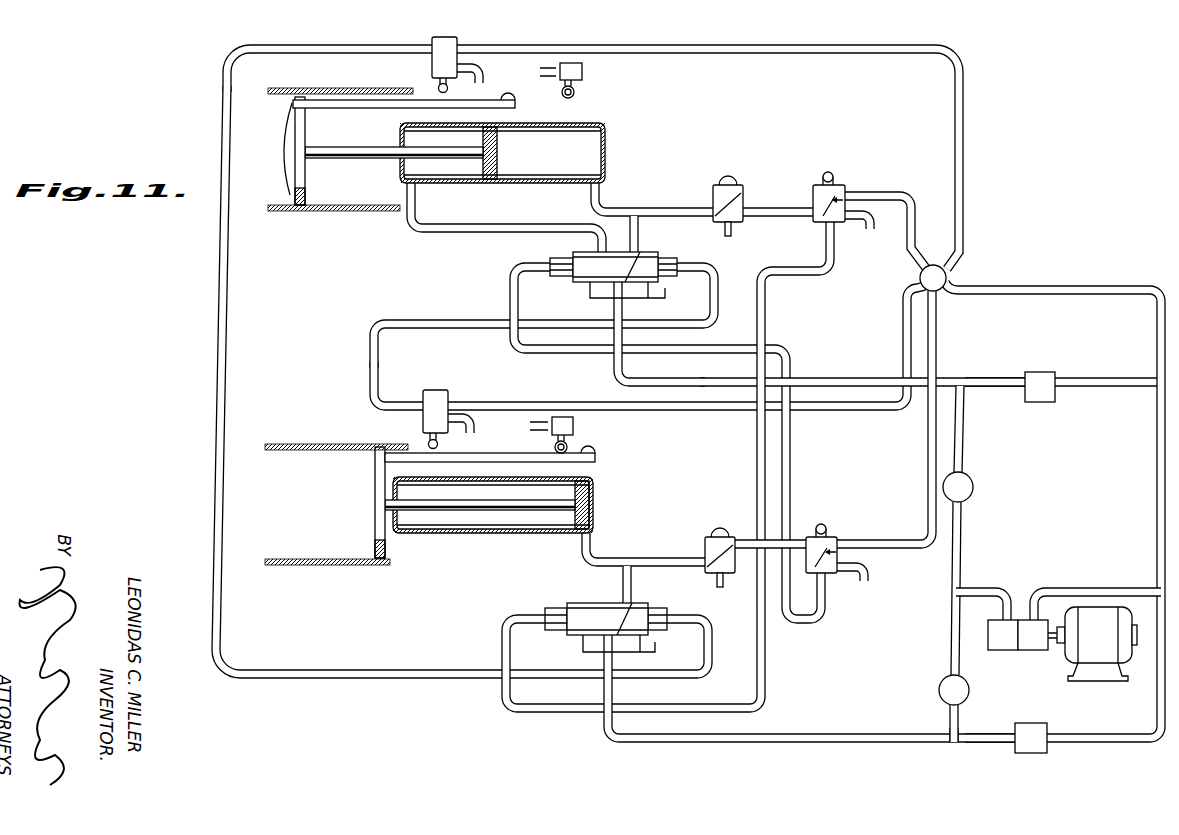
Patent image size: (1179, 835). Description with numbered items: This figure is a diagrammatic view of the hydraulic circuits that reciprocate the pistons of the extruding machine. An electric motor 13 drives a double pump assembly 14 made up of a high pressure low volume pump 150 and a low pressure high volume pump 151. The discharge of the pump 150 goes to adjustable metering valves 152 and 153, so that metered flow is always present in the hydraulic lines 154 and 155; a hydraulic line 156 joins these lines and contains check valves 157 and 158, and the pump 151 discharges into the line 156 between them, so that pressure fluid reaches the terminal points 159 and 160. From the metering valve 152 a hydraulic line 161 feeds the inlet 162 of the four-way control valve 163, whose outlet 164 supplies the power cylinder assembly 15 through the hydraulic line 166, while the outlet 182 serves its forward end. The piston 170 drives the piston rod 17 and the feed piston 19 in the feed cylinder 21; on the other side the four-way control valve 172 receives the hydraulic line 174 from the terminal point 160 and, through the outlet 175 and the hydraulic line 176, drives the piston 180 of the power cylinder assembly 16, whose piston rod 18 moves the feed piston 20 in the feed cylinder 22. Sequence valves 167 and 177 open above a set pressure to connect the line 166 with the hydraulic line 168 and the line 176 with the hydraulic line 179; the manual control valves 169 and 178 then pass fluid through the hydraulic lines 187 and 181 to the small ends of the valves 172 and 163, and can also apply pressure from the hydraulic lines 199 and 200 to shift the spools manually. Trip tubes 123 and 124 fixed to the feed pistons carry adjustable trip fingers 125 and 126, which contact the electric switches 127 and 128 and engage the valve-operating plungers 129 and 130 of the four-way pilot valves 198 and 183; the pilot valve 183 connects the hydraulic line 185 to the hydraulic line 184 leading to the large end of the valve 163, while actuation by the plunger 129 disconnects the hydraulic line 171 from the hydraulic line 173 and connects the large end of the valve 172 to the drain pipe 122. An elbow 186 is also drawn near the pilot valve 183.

The electric motor 13 is at (1096, 608).
The double pump assembly 14 is at (1058, 646).
The power cylinder assembly 15 is at (605, 129).
The power cylinder assembly 16 is at (601, 483).
The piston rod 17 is at (380, 153).
The piston rod 18 is at (487, 515).
The feed piston 19 is at (295, 165).
The feed piston 20 is at (375, 507).
The feed cylinder 21 is at (325, 205).
The feed cylinder 22 is at (313, 560).
The drain pipe 122 is at (480, 62).
The trip tube 123 is at (362, 88).
The trip tube 124 is at (497, 456).
The trip finger 125 is at (507, 97).
The trip finger 126 is at (598, 455).
The electric switch 127 is at (582, 86).
The electric switch 128 is at (576, 445).
The valve-operating plunger 129 is at (438, 88).
The valve-operating plunger 130 is at (428, 447).
The high pressure low volume pump 150 is at (1023, 650).
The low pressure high volume pump 151 is at (1000, 651).
The metering valve 152 is at (1040, 372).
The metering valve 153 is at (1035, 754).
The hydraulic line 154 is at (990, 382).
The hydraulic line 155 is at (993, 744).
The hydraulic line 156 is at (964, 445).
The check valve 157 is at (974, 485).
The check valve 158 is at (940, 686).
The terminal point 159 is at (947, 280).
The terminal point 160 is at (953, 744).
The hydraulic line 161 is at (832, 378).
The inlet 162 is at (614, 313).
The four-way control valve 163 is at (575, 257).
The outlet 164 is at (638, 233).
The hydraulic line 166 is at (600, 207).
The sequence valve 167 is at (713, 192).
The hydraulic line 168 is at (771, 207).
The manual control valve 169 is at (842, 186).
The piston 170 is at (498, 152).
The hydraulic line 171 is at (817, 53).
The four-way control valve 172 is at (562, 612).
The hydraulic line 173 is at (372, 679).
The hydraulic line 174 is at (722, 743).
The outlet 175 is at (632, 585).
The hydraulic line 176 is at (597, 560).
The sequence valve 177 is at (706, 540).
The manual control valve 178 is at (838, 539).
The hydraulic line 179 is at (796, 540).
The piston 180 is at (592, 505).
The hydraulic line 181 is at (786, 496).
The outlet 182 is at (455, 231).
The four-way pilot valve 183 is at (434, 391).
The hydraulic line 184 is at (835, 411).
The hydraulic line 185 is at (718, 308).
The elbow conduit 186 is at (458, 418).
The hydraulic line 187 is at (543, 713).
The four-way pilot valve 198 is at (432, 40).
The hydraulic line 199 is at (907, 238).
The hydraulic line 200 is at (928, 450).